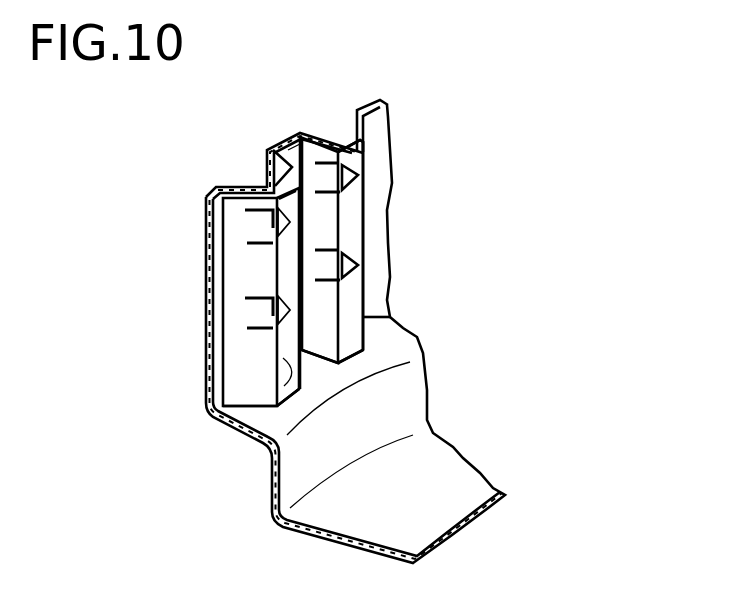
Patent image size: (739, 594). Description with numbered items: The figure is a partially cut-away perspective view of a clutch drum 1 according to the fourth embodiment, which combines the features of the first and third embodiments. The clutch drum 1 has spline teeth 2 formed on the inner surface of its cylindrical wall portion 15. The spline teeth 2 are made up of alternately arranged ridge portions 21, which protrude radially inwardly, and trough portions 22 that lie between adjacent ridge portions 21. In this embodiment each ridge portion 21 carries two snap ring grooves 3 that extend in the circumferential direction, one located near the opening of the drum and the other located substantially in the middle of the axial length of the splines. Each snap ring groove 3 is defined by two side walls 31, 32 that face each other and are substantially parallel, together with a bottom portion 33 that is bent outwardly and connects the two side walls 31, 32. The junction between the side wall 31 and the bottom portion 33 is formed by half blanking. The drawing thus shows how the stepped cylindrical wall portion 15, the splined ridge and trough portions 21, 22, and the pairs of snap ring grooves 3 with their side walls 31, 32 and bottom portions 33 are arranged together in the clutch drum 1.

The clutch drum 1 is at (417, 155).
The cylindrical wall portion 15 is at (407, 114).
The spline teeth 2 is at (276, 124).
The ridge portion 21 is at (278, 386).
The trough portion 22 is at (268, 142).
The snap ring groove 3 is at (380, 182).
The side wall 31 is at (258, 237).
The side wall 32 is at (318, 205).
The bottom portion 33 is at (273, 232).